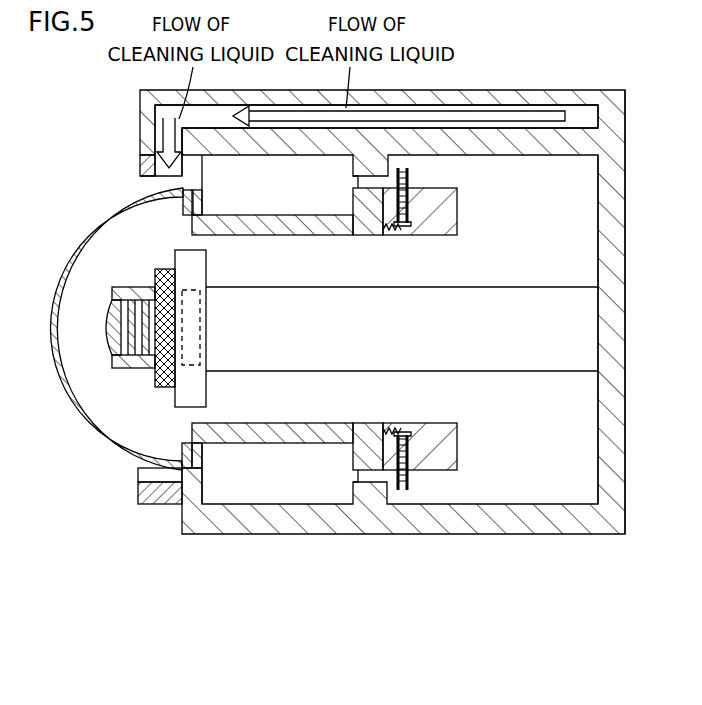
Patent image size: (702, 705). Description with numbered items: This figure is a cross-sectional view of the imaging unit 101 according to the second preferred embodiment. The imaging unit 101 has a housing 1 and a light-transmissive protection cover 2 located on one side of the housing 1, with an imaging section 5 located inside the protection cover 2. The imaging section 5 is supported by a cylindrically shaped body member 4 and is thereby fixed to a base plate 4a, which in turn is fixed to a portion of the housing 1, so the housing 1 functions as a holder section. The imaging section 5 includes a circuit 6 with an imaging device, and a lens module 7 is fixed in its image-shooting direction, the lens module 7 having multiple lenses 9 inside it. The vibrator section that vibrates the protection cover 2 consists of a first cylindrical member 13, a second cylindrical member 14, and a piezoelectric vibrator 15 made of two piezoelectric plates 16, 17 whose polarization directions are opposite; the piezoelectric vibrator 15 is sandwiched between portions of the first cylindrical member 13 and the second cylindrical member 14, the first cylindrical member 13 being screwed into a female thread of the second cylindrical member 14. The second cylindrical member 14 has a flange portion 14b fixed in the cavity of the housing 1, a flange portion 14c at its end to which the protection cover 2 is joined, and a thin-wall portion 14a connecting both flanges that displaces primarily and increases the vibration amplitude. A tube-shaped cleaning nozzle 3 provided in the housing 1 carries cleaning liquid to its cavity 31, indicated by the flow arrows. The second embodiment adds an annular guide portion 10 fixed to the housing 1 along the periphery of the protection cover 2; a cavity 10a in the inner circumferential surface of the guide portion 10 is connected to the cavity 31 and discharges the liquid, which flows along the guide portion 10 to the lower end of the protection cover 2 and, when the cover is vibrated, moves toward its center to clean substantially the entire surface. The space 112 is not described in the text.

The imaging unit 101 is at (604, 50).
The housing 1 is at (563, 532).
The protection cover 2 is at (73, 420).
The cleaning nozzle 3 is at (466, 90).
The body member 4 is at (518, 372).
The base plate 4a is at (617, 341).
The imaging section 5 is at (175, 408).
The circuit 6 is at (195, 290).
The lens module 7 is at (137, 370).
The lenses 9 is at (105, 341).
The guide portion 10 is at (141, 493).
The cavity 10a is at (184, 195).
The first cylindrical member 13 is at (445, 481).
The second cylindrical member 14 is at (287, 413).
The thin-wall portion 14a is at (258, 444).
The flange portion 14b is at (350, 479).
The flange portion 14c is at (201, 457).
The piezoelectric vibrator 15 is at (401, 420).
The piezoelectric plate 16 is at (398, 498).
The piezoelectric plate 17 is at (407, 493).
The cavity 31 is at (161, 151).
The accommodating space 112 is at (311, 482).